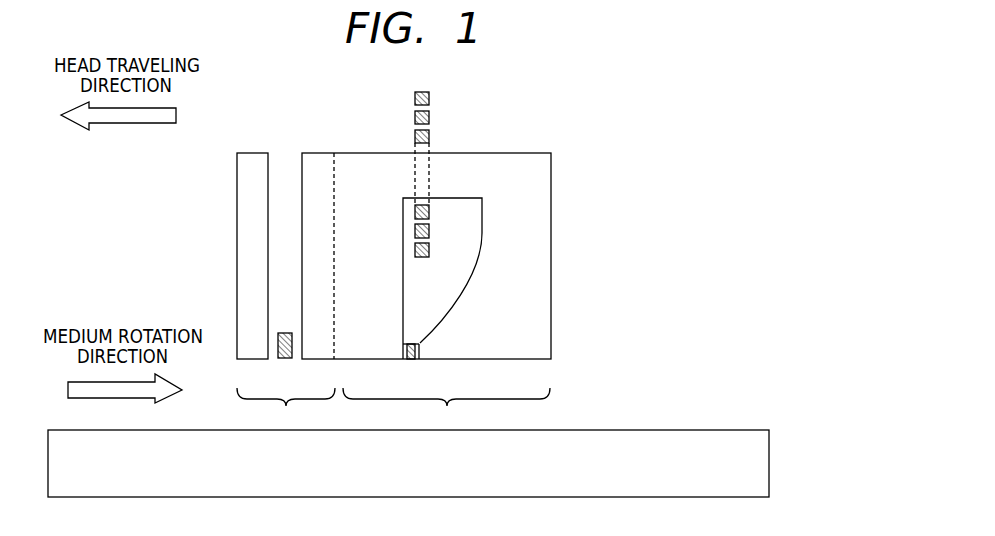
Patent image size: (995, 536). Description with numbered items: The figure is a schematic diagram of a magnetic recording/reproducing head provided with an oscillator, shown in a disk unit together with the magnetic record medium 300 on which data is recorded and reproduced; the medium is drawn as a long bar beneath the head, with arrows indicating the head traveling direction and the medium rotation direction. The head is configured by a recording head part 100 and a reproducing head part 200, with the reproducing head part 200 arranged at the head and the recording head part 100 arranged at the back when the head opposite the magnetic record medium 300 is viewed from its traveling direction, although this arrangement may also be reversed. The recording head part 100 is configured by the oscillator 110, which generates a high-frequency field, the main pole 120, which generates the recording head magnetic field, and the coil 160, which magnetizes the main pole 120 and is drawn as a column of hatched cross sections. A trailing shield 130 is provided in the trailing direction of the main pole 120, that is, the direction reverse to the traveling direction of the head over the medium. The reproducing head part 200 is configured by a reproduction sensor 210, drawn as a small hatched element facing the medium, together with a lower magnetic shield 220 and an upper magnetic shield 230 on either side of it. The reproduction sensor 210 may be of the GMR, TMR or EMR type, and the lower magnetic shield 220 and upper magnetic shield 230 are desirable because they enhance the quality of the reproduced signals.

The recording head part 100 is at (446, 407).
The oscillator 110 is at (411, 359).
The main pole 120 is at (385, 348).
The trailing shield 130 is at (483, 348).
The coil 160 is at (431, 136).
The reproducing head part 200 is at (286, 407).
The reproduction sensor 210 is at (283, 351).
The lower magnetic shield 220 is at (254, 152).
The upper magnetic shield 230 is at (316, 162).
The magnetic record medium 300 is at (643, 430).